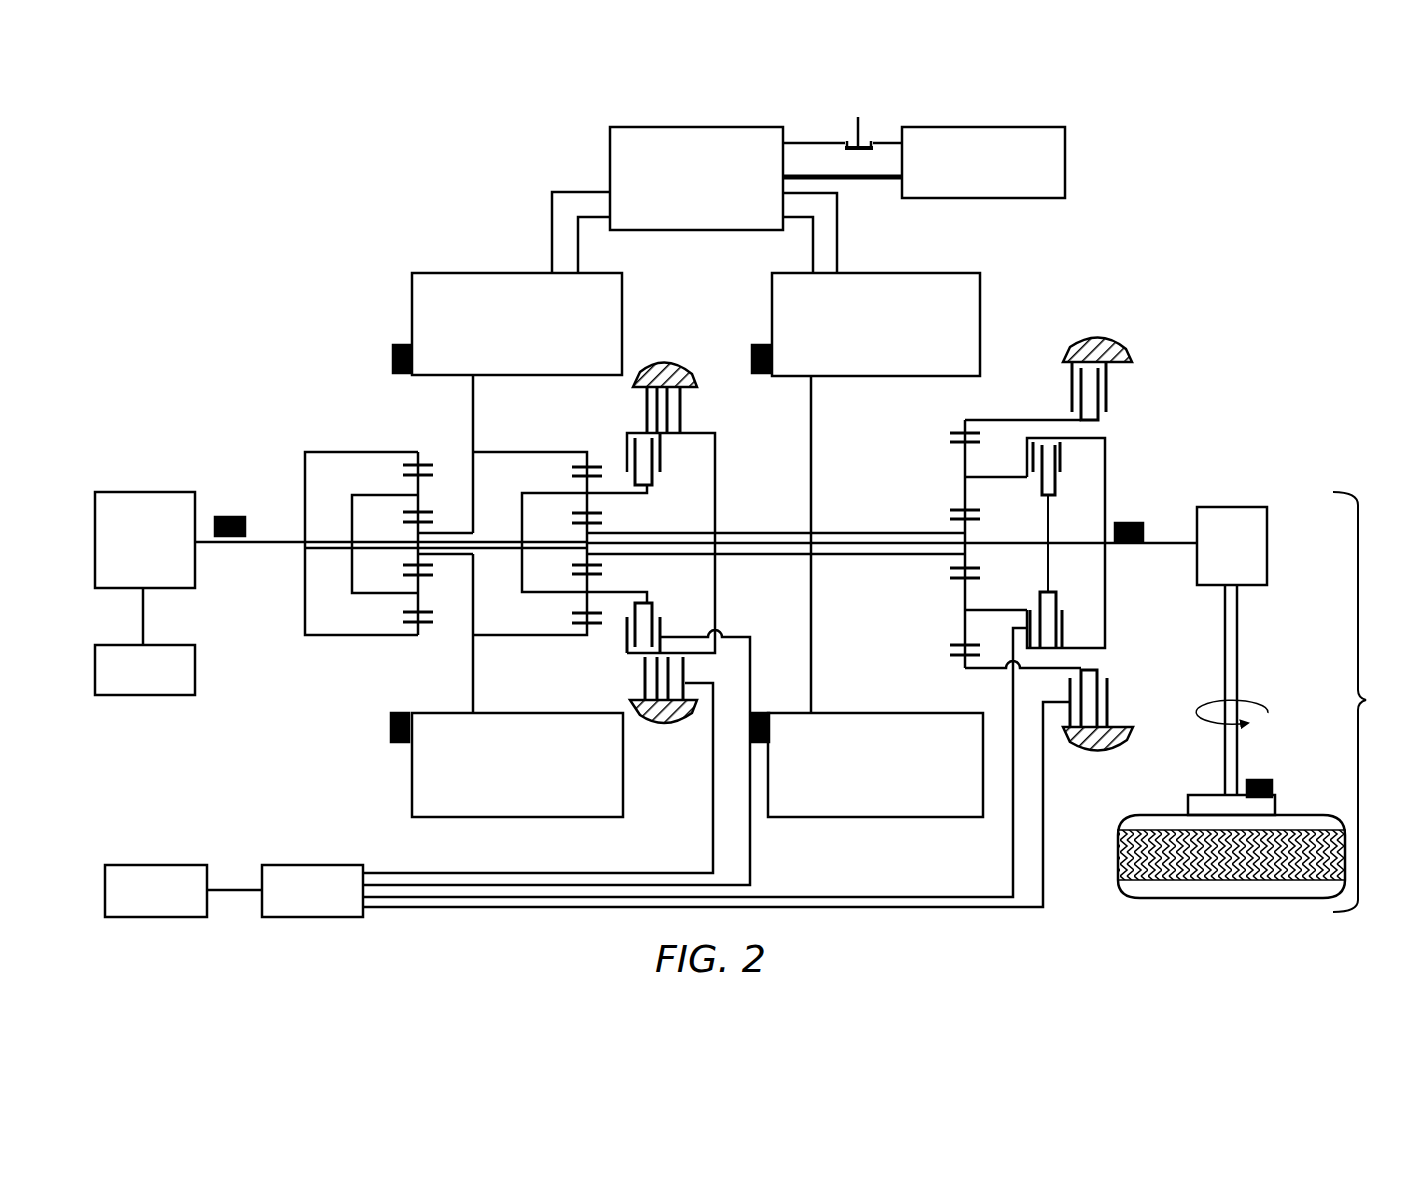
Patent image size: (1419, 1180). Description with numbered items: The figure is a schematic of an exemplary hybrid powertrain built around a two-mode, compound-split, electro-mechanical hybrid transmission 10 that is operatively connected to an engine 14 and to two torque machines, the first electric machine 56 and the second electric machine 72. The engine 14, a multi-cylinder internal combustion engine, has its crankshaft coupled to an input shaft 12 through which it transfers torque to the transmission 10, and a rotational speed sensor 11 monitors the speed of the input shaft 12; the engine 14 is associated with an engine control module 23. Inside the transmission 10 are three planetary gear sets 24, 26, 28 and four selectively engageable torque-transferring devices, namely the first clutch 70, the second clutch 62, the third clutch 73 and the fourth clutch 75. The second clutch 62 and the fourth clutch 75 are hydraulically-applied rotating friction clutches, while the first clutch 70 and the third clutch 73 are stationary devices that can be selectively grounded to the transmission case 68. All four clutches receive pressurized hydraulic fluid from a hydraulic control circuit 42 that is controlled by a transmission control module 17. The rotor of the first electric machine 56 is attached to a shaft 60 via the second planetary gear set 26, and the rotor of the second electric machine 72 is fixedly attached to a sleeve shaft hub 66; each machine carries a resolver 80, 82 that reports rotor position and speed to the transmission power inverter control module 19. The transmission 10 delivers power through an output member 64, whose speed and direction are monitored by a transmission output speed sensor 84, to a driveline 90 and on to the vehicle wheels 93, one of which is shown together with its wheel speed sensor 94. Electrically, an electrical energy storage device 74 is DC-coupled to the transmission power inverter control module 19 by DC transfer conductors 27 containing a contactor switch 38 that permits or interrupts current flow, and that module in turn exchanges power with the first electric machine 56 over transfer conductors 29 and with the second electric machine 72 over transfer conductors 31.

The electro-mechanical hybrid transmission 10 is at (368, 230).
The rotational speed sensor 11 is at (230, 516).
The input shaft 12 is at (281, 538).
The engine 14 is at (150, 490).
The transmission control module 17 is at (143, 864).
The transmission power inverter control module 19 is at (609, 146).
The engine control module 23 is at (197, 686).
The first planetary gear set 24 is at (410, 445).
The second planetary gear set 26 is at (580, 445).
The DC transfer conductors 27 is at (806, 141).
The third planetary gear set 28 is at (962, 418).
The transfer conductors 29 is at (551, 232).
The transfer conductors 31 is at (840, 226).
The contactor switch 38 is at (861, 128).
The hydraulic control circuit 42 is at (278, 864).
The first electric machine 56 is at (411, 302).
The shaft 60 is at (1017, 541).
The clutch C2 62 is at (1070, 480).
The output member 64 is at (1163, 540).
The sleeve shaft hub 66 is at (850, 532).
The transmission case 68 is at (665, 365).
The clutch C1 70 is at (1058, 382).
The second electric machine 72 is at (985, 293).
The clutch C3 73 is at (690, 410).
The electrical energy storage device 74 is at (1067, 160).
The clutch C4 75 is at (662, 478).
The resolver 80 is at (392, 358).
The resolver 82 is at (760, 343).
The transmission output speed sensor 84 is at (1130, 521).
The driveline 90 is at (1366, 700).
The vehicle wheel 93 is at (1187, 803).
The wheel speed sensor 94 is at (1262, 778).